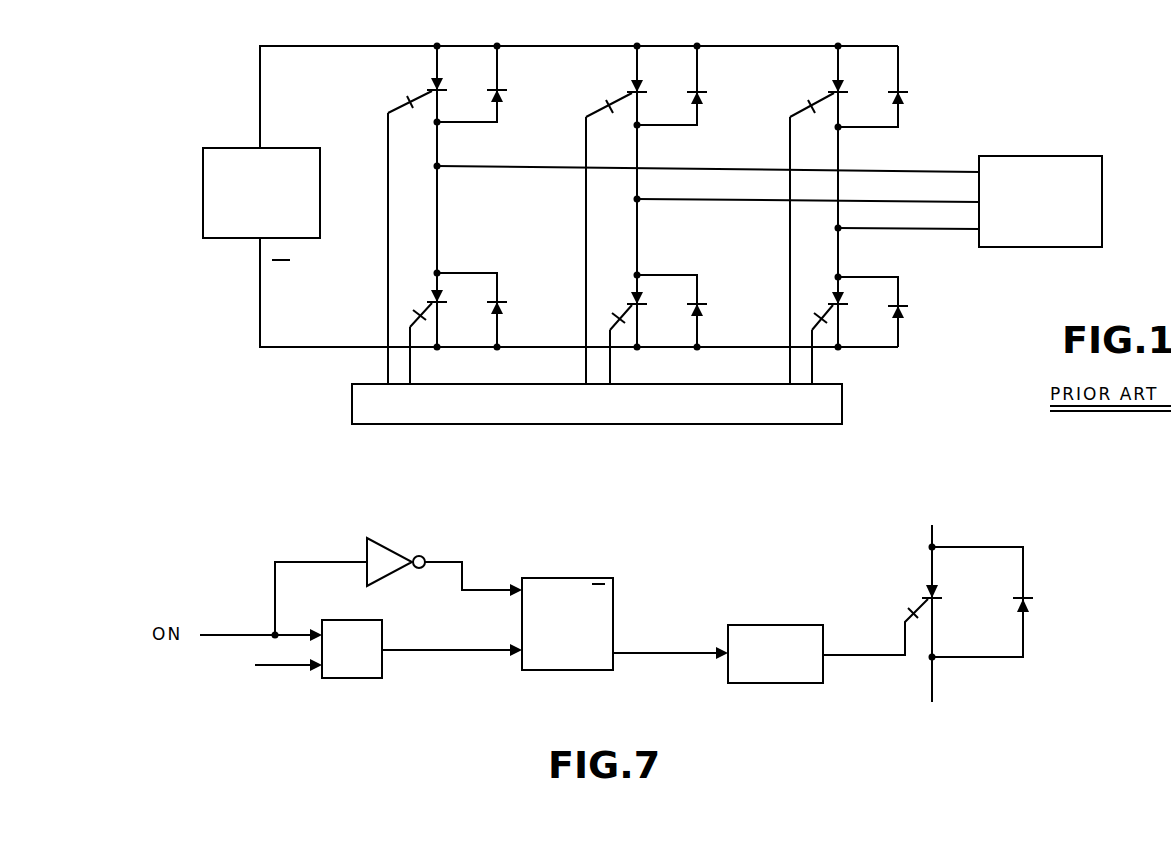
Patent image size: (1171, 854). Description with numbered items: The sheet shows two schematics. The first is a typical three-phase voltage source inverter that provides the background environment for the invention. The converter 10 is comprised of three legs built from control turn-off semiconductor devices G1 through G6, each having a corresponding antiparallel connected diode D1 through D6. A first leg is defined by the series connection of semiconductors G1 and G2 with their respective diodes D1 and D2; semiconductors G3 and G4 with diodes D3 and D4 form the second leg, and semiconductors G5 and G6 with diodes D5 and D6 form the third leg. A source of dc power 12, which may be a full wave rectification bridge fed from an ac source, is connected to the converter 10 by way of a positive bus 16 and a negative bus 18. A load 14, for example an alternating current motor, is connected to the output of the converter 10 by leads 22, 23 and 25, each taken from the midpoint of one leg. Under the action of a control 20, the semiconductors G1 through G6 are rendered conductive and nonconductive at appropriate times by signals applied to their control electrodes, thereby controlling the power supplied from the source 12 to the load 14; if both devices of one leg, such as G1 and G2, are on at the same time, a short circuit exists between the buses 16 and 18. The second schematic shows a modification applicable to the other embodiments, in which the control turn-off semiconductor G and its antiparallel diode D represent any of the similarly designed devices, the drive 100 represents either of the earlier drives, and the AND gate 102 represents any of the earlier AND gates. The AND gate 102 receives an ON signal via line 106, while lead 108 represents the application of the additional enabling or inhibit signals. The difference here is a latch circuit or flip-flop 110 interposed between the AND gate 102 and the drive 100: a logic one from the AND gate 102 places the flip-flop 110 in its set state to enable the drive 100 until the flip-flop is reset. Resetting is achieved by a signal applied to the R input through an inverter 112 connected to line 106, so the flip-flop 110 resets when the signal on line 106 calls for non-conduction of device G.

In FIG. 1, the converter 10 is at (535, 223).
In FIG. 1, the source of dc power 12 is at (203, 148).
In FIG. 1, the load 14 is at (1088, 156).
In FIG. 1, the positive bus 16 is at (260, 70).
In FIG. 1, the negative bus 18 is at (258, 347).
In FIG. 1, the control 20 is at (846, 413).
In FIG. 1, the lead 22 is at (497, 168).
In FIG. 1, the lead 23 is at (716, 200).
In FIG. 1, the lead 25 is at (906, 230).
In FIG. 1, the control turn-off semiconductor G1 is at (428, 76).
In FIG. 1, the control turn-off semiconductor G2 is at (420, 300).
In FIG. 1, the control turn-off semiconductor G3 is at (618, 88).
In FIG. 1, the control turn-off semiconductor G4 is at (620, 296).
In FIG. 1, the control turn-off semiconductor G5 is at (822, 88).
In FIG. 1, the control turn-off semiconductor G6 is at (822, 296).
In FIG. 1, the diode D1 is at (501, 83).
In FIG. 1, the diode D2 is at (501, 290).
In FIG. 1, the diode D3 is at (702, 84).
In FIG. 1, the diode D4 is at (702, 288).
In FIG. 1, the diode D5 is at (904, 84).
In FIG. 1, the diode D6 is at (904, 289).
In FIG. 7, the drive 100 is at (790, 603).
In FIG. 7, the AND gate 102 is at (377, 679).
In FIG. 7, the line 106 is at (244, 632).
In FIG. 7, the lead 108 is at (286, 668).
In FIG. 7, the flip-flop 110 is at (579, 576).
In FIG. 7, the inverter 112 is at (394, 549).
In FIG. 7, the control turn-off semiconductor G is at (948, 600).
In FIG. 7, the diode D is at (1035, 600).